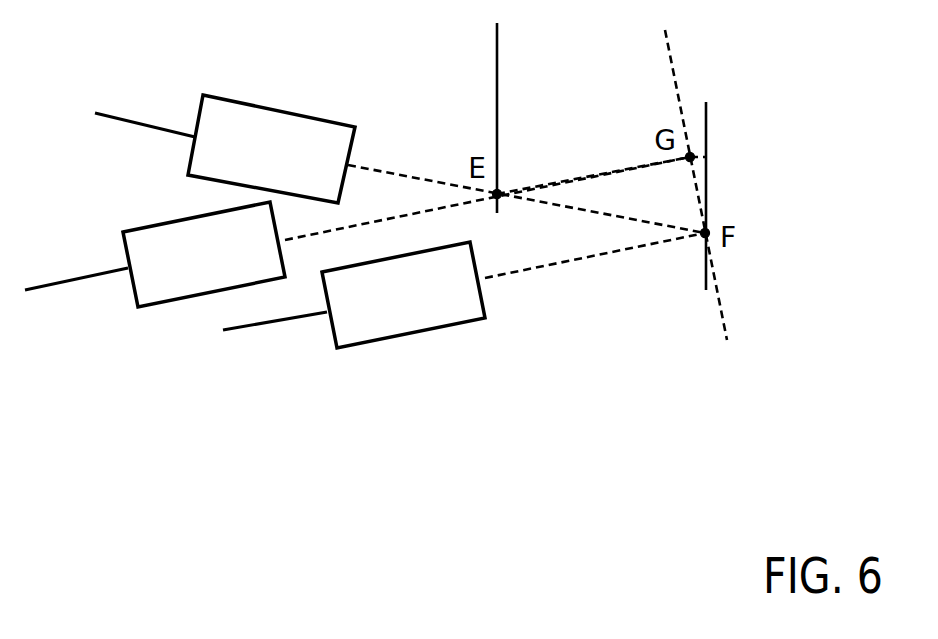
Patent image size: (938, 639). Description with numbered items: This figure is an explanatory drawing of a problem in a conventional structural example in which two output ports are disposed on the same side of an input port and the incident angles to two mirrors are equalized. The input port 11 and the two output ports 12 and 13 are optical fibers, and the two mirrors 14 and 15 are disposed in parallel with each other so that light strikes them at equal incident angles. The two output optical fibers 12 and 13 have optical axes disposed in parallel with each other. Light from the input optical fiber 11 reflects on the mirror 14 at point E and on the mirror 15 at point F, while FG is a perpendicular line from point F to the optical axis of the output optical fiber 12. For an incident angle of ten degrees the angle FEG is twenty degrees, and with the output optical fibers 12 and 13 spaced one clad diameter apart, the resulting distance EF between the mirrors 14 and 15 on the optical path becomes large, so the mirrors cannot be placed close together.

The input port 11 is at (307, 113).
The output port 12 is at (165, 220).
The output port 13 is at (410, 335).
The mirror 14 is at (497, 58).
The mirror 15 is at (705, 125).